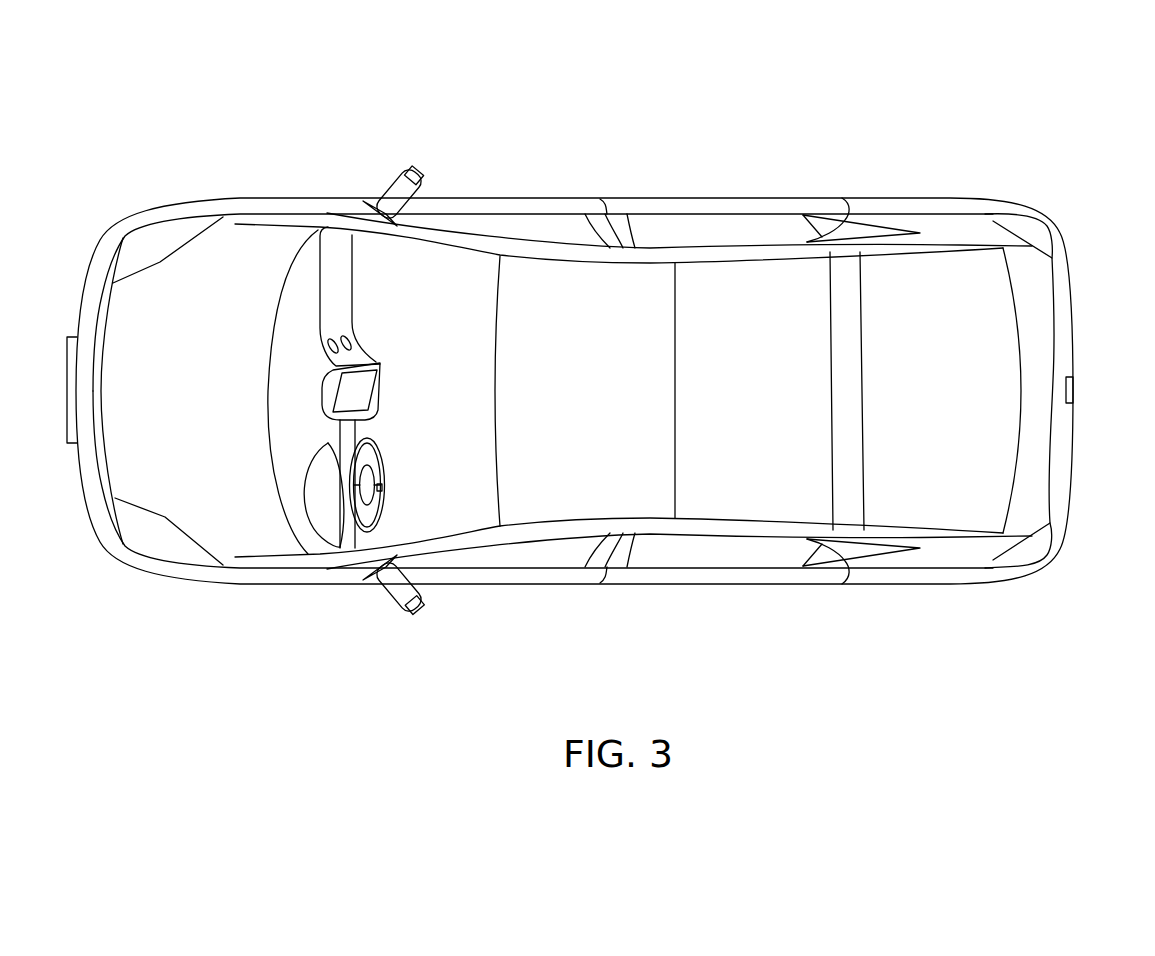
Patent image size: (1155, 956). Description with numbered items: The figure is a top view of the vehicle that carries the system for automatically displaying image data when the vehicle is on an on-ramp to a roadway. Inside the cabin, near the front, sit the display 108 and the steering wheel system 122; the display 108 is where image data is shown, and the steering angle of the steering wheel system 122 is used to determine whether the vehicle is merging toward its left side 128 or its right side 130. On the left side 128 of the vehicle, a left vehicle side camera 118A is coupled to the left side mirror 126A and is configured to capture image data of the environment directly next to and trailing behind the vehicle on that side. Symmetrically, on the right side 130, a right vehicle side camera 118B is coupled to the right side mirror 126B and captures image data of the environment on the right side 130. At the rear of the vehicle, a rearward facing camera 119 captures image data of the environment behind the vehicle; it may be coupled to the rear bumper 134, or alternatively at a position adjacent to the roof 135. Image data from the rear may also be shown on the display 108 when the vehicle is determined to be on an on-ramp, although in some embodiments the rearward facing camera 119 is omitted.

The display 108 is at (333, 378).
The left vehicle side camera 118A is at (416, 608).
The right vehicle side camera 118B is at (410, 171).
The rearward facing camera 119 is at (1073, 390).
The steering wheel system 122 is at (328, 443).
The left side mirror 126A is at (383, 604).
The right side mirror 126B is at (387, 176).
The left side 128 is at (607, 591).
The right side 130 is at (607, 125).
The rear bumper 134 is at (1071, 308).
The roof 135 is at (641, 259).